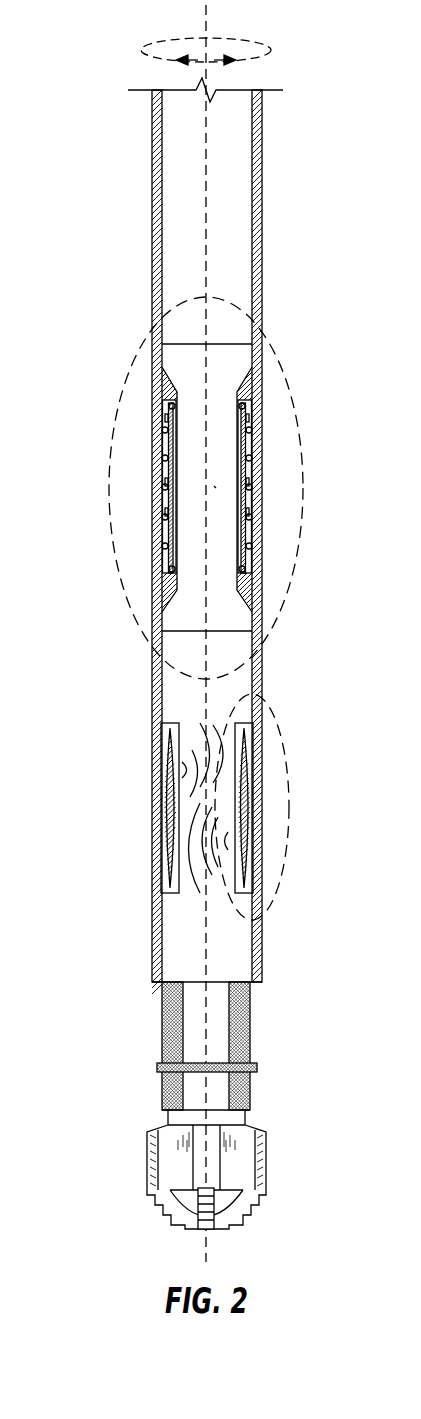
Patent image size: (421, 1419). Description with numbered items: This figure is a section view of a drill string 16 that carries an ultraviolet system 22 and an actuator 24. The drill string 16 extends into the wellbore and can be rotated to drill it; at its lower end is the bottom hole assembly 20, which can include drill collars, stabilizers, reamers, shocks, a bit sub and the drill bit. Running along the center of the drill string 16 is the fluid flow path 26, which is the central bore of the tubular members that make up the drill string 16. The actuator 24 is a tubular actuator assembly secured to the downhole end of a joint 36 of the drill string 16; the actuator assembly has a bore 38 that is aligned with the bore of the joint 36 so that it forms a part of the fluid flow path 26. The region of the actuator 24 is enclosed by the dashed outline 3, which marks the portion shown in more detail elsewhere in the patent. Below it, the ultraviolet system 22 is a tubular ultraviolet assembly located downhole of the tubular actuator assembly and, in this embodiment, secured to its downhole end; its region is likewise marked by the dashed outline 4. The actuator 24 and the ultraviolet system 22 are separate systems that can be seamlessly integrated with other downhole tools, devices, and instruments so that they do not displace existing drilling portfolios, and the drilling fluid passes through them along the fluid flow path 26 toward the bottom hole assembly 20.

The drill string 16 is at (262, 185).
The fluid flow path 26 is at (157, 215).
The joint 36 is at (152, 291).
The detail section of FIG. 3 is at (286, 383).
The bore 38 is at (215, 487).
The actuator 24 is at (155, 532).
The detail section of FIG. 4 is at (283, 767).
The ultraviolet system 22 is at (165, 803).
The bottom hole assembly 20 is at (131, 1054).